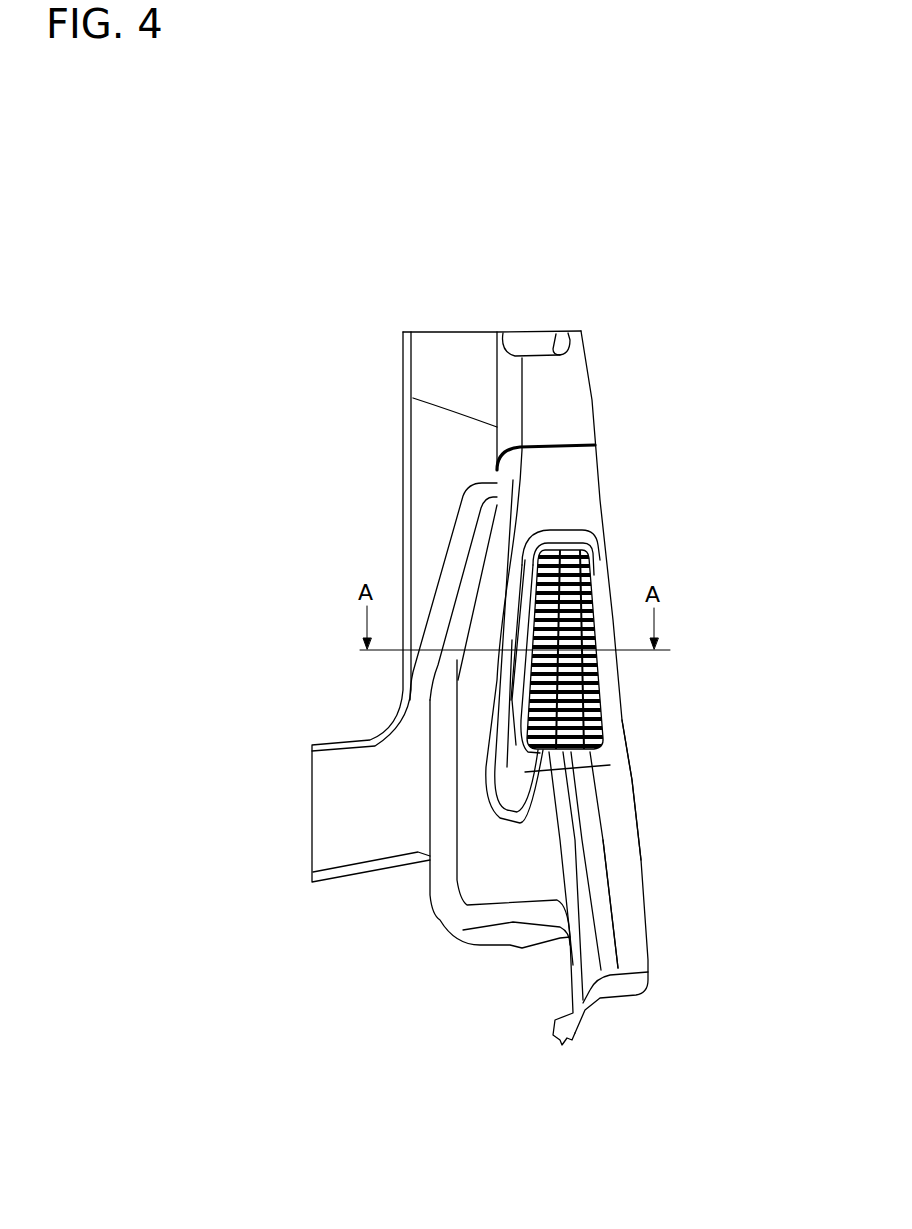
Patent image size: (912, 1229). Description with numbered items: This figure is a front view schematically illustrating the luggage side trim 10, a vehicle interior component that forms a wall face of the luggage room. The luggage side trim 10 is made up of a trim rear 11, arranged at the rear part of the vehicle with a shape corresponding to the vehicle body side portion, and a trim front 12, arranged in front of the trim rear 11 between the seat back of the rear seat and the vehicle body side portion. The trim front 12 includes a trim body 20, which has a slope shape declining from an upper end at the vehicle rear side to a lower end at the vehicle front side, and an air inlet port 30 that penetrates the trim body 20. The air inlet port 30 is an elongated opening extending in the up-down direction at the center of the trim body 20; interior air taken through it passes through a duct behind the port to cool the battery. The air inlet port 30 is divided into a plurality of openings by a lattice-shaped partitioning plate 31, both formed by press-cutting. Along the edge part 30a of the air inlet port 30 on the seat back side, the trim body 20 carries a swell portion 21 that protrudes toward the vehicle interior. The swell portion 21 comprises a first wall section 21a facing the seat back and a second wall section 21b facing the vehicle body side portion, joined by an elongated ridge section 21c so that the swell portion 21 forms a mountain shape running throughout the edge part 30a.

The luggage side trim 10 is at (582, 293).
The trim rear 11 is at (398, 359).
The trim front 12 is at (648, 815).
The trim body 20 is at (622, 875).
The swell portion 21 is at (505, 778).
The first wall section 21a is at (518, 617).
The second wall section 21b is at (560, 753).
The ridge section 21c is at (523, 660).
The air inlet port 30 is at (605, 693).
The edge part 30a is at (520, 613).
The partitioning plate 31 is at (592, 572).